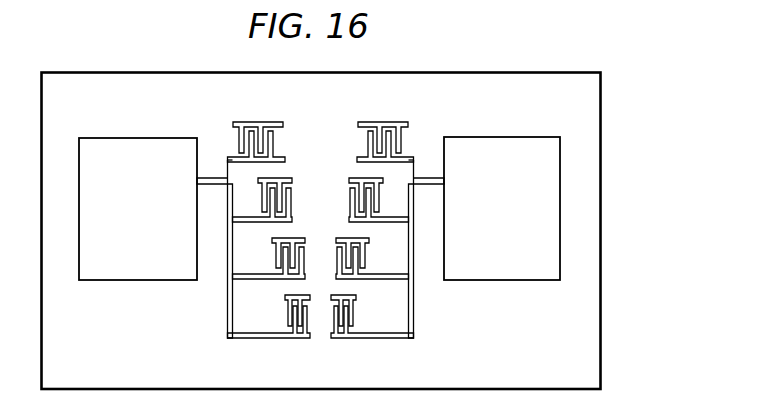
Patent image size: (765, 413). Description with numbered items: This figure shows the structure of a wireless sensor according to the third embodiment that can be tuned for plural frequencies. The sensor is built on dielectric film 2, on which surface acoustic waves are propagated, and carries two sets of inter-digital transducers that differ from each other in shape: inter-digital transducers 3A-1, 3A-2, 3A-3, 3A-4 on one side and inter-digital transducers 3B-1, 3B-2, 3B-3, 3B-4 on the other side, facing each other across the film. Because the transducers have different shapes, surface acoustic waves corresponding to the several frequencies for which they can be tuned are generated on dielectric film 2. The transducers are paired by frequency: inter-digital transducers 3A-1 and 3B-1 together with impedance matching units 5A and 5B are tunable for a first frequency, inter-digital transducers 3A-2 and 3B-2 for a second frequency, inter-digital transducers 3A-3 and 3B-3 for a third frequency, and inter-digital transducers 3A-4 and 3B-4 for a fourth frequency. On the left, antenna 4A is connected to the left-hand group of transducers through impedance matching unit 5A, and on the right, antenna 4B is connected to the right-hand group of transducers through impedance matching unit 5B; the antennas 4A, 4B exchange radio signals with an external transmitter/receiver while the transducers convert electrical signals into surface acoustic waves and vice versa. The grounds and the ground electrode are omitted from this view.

The dielectric film 2 is at (603, 113).
The antenna 4A is at (125, 137).
The antenna 4B is at (488, 137).
The impedance matching unit 5A is at (213, 177).
The impedance matching unit 5B is at (427, 177).
The inter-digital transducer 3A-1 is at (243, 120).
The inter-digital transducer 3A-2 is at (292, 178).
The inter-digital transducer 3A-3 is at (300, 238).
The inter-digital transducer 3A-4 is at (295, 340).
The inter-digital transducer 3B-1 is at (398, 120).
The inter-digital transducer 3B-2 is at (353, 178).
The inter-digital transducer 3B-3 is at (353, 279).
The inter-digital transducer 3B-4 is at (350, 340).